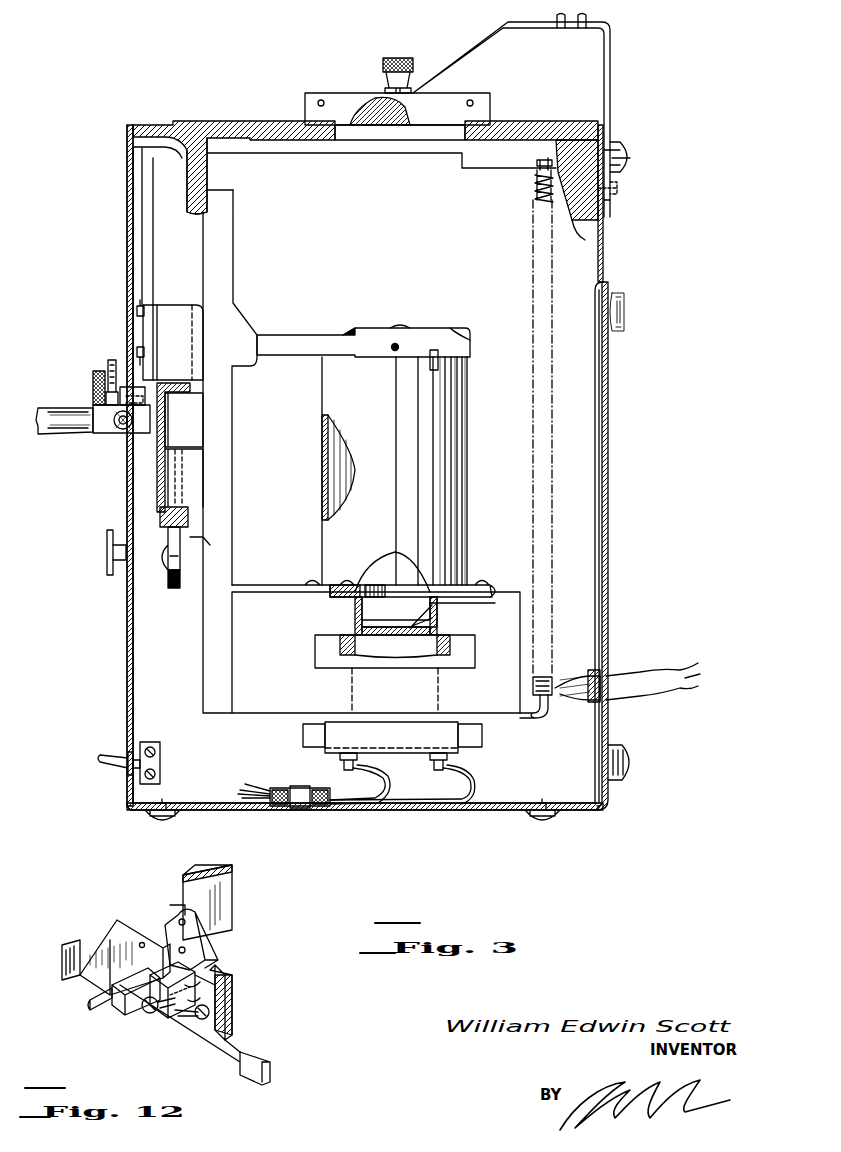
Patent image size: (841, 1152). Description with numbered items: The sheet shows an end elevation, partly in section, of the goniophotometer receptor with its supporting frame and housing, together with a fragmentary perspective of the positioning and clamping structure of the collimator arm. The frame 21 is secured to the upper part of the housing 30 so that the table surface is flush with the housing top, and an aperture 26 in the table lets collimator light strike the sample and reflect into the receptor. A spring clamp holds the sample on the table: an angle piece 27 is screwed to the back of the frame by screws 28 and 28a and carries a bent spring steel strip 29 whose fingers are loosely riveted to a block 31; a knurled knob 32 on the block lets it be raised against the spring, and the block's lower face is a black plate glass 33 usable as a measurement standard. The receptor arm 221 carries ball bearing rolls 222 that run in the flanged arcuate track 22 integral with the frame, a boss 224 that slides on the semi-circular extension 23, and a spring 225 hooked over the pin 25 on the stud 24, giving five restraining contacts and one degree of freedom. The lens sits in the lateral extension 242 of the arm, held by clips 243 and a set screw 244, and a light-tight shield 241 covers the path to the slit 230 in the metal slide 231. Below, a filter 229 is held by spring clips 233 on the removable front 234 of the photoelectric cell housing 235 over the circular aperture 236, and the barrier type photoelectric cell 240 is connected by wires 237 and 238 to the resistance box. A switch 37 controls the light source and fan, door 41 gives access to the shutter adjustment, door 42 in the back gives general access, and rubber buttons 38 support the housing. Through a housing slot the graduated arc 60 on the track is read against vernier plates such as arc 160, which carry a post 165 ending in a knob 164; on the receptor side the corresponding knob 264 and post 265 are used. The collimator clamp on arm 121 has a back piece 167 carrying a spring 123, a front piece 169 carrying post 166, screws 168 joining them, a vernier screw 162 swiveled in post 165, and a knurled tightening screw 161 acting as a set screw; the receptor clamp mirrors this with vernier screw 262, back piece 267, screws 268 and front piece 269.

In FIG. 3, the frame 21 is at (222, 132).
In FIG. 3, the flanged arcuate guide or track 22 is at (166, 530).
In FIG. 12, the flanged arcuate guide or track 22 is at (262, 1055).
In FIG. 3, the semi-circular extension 23 is at (208, 168).
In FIG. 3, the projecting stud or pin 24 is at (600, 240).
In FIG. 3, the pin 25 is at (535, 168).
In FIG. 3, the aperture 26 is at (360, 145).
In FIG. 3, the angle piece 27 is at (612, 50).
In FIG. 3, the screw 28 is at (616, 150).
In FIG. 3, the screw 28a is at (616, 185).
In FIG. 3, the bent spring steel strip 29 is at (490, 30).
In FIG. 3, the housing 30 is at (128, 212).
In FIG. 3, the block 31 is at (476, 103).
In FIG. 3, the knurled knob 32 is at (413, 60).
In FIG. 3, the black plate glass 33 is at (372, 96).
In FIG. 3, the switch 37 is at (108, 768).
In FIG. 3, the foot 38 is at (632, 155).
In FIG. 3, the door 41 is at (128, 650).
In FIG. 3, the door 42 is at (610, 388).
In FIG. 3, the graduated annular section or arc 60 is at (155, 452).
In FIG. 12, the graduated annular section or arc 60 is at (95, 985).
In FIG. 12, the arm 121 is at (232, 877).
In FIG. 3, the spring 123 is at (178, 480).
In FIG. 12, the spring 123 is at (232, 1012).
In FIG. 12, the graduated vernier arc 160 is at (117, 925).
In FIG. 12, the knurled head tightening screw 161 is at (148, 1015).
In FIG. 12, the vernier screw 162 is at (205, 1025).
In FIG. 12, the knob 164 is at (95, 1008).
In FIG. 12, the post 165 is at (128, 1000).
In FIG. 12, the post 166 is at (178, 1030).
In FIG. 12, the back piece 167 is at (218, 938).
In FIG. 12, the screw 168 is at (190, 925).
In FIG. 12, the front piece 169 is at (178, 905).
In FIG. 3, the arm 221 is at (232, 216).
In FIG. 3, the ball bearing roll 222 is at (170, 590).
In FIG. 3, the boss 224 is at (208, 200).
In FIG. 3, the spring 225 is at (548, 680).
In FIG. 3, the filter 229 is at (355, 617).
In FIG. 3, the slit 230 is at (400, 592).
In FIG. 3, the metal slide 231 is at (495, 590).
In FIG. 3, the spring clip 233 is at (437, 620).
In FIG. 3, the removable front 234 is at (445, 608).
In FIG. 3, the photoelectric cell housing 235 is at (462, 658).
In FIG. 3, the circular aperture 236 is at (345, 640).
In FIG. 3, the wire 237 is at (340, 806).
In FIG. 3, the wire 238 is at (395, 800).
In FIG. 3, the barrier type photoelectric cell 240 is at (345, 748).
In FIG. 3, the light-tight tube or shield 241 is at (345, 408).
In FIG. 3, the lateral extension 242 is at (282, 338).
In FIG. 3, the clip 243 is at (402, 326).
In FIG. 3, the set screw 244 is at (400, 348).
In FIG. 3, the vernier screw 262 is at (94, 390).
In FIG. 3, the knob 264 is at (40, 425).
In FIG. 3, the post 265 is at (112, 440).
In FIG. 3, the back piece 267 is at (163, 320).
In FIG. 3, the screw 268 is at (140, 312).
In FIG. 3, the front piece 269 is at (150, 330).